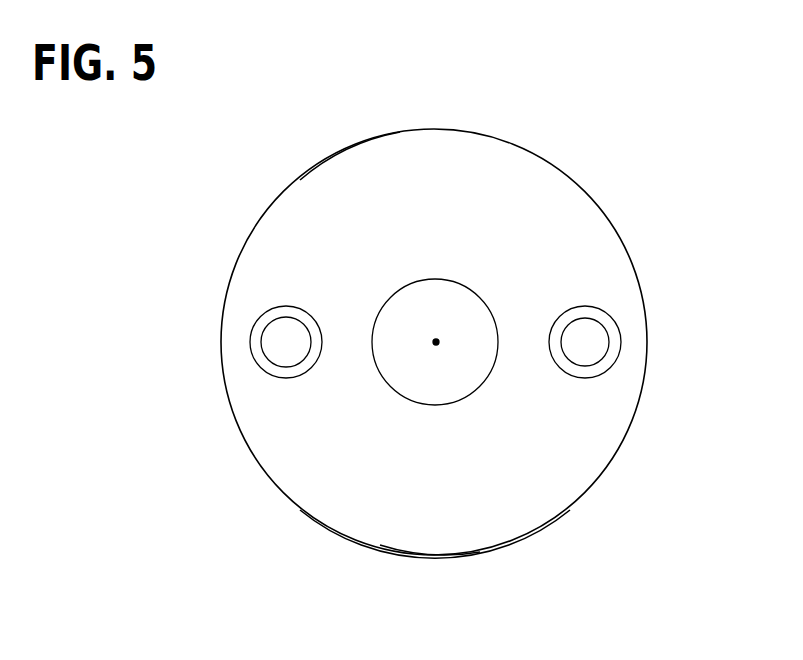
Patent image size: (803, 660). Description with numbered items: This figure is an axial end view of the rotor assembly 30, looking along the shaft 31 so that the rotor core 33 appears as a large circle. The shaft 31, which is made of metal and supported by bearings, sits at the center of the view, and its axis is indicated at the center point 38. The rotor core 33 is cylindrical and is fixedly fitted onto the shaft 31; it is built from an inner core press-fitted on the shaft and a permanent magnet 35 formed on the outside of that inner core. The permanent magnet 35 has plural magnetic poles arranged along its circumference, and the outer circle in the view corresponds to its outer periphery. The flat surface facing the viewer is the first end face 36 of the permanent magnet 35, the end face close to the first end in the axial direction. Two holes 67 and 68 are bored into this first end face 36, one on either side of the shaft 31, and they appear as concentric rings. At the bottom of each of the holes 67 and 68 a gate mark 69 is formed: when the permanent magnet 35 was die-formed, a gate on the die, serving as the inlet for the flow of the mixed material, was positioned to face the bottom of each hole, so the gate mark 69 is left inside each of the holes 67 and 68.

The end plate 30 is at (263, 188).
The shaft 31 is at (462, 283).
The rotor core 33 is at (482, 552).
The permanent magnet 35 is at (398, 522).
The first end face 36 is at (342, 200).
The center axis 38 is at (436, 340).
The hole 67 is at (272, 313).
The hole 68 is at (598, 313).
The gate mark 69 is at (285, 342).